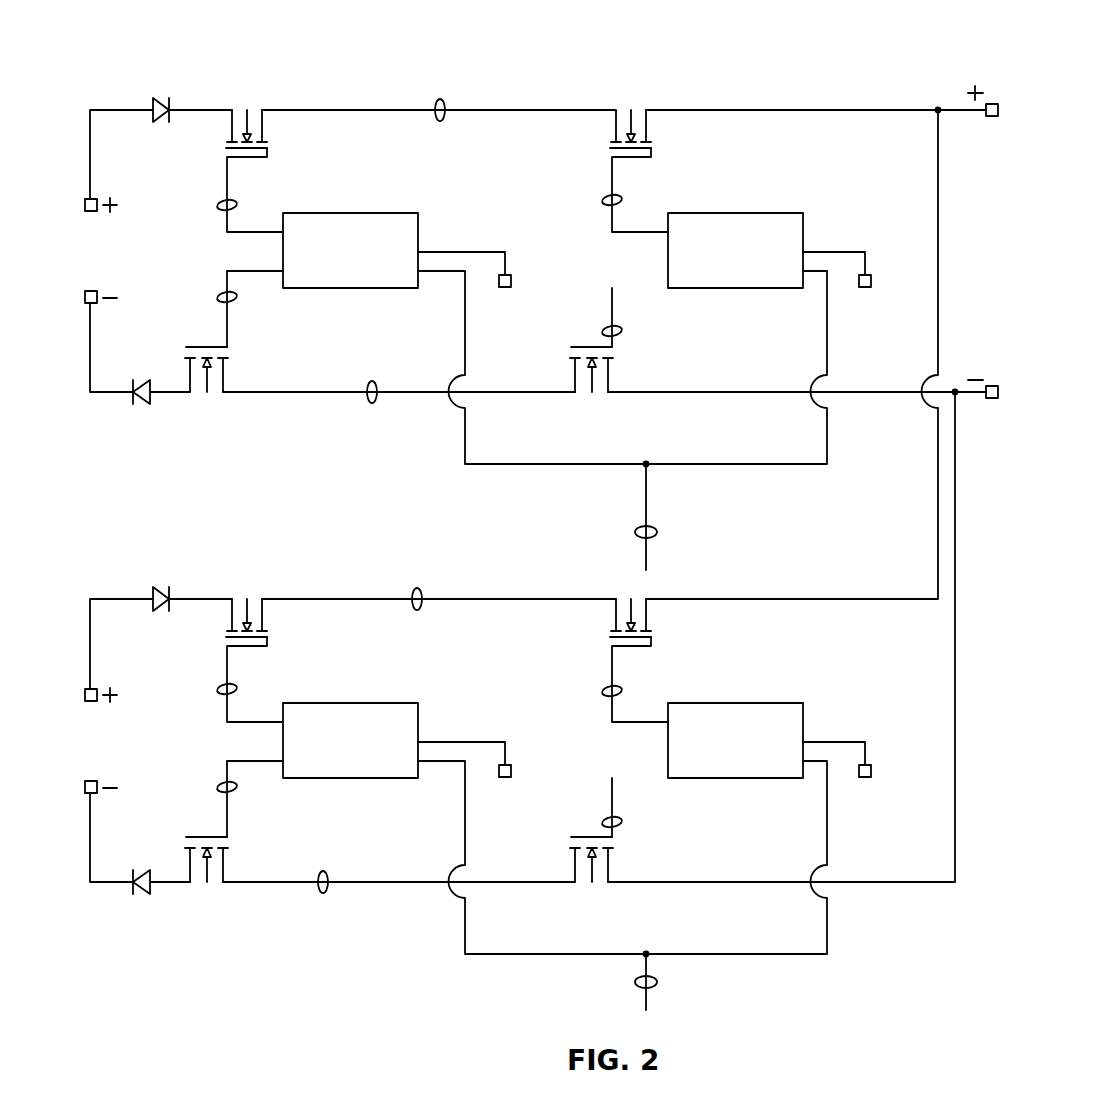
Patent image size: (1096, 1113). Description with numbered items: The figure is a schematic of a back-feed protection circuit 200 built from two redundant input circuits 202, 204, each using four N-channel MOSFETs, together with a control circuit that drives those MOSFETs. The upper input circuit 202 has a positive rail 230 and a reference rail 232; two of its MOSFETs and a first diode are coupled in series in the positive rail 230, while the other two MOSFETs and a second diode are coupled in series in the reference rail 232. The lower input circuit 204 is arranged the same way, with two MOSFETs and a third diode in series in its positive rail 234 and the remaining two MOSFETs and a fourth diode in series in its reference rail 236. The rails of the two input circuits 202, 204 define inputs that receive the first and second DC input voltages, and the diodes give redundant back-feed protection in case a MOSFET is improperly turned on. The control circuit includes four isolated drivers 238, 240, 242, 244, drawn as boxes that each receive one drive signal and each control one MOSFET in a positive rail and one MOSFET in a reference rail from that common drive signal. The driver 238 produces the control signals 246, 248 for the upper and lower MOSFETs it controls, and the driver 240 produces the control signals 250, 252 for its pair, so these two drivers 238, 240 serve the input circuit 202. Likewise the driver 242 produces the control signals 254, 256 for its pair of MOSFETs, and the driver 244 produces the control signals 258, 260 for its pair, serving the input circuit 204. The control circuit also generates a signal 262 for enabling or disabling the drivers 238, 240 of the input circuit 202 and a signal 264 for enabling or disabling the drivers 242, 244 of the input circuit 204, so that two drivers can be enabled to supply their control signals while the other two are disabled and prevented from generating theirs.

The back-feed protection circuit 200 is at (877, 39).
The input circuit 202 is at (553, 170).
The input circuit 204 is at (532, 648).
The positive rail 230 is at (443, 99).
The reference rail 232 is at (372, 405).
The positive rail 234 is at (420, 588).
The reference rail 236 is at (323, 894).
The isolated driver 238 is at (391, 213).
The isolated driver 240 is at (789, 213).
The isolated driver 242 is at (399, 703).
The isolated driver 244 is at (791, 703).
The control signal 246 is at (238, 205).
The control signal 248 is at (217, 297).
The control signal 250 is at (623, 200).
The control signal 252 is at (622, 333).
The control signal 254 is at (238, 689).
The control signal 256 is at (217, 788).
The control signal 258 is at (623, 690).
The control signal 260 is at (622, 824).
The signal 262 is at (658, 532).
The signal 264 is at (658, 982).